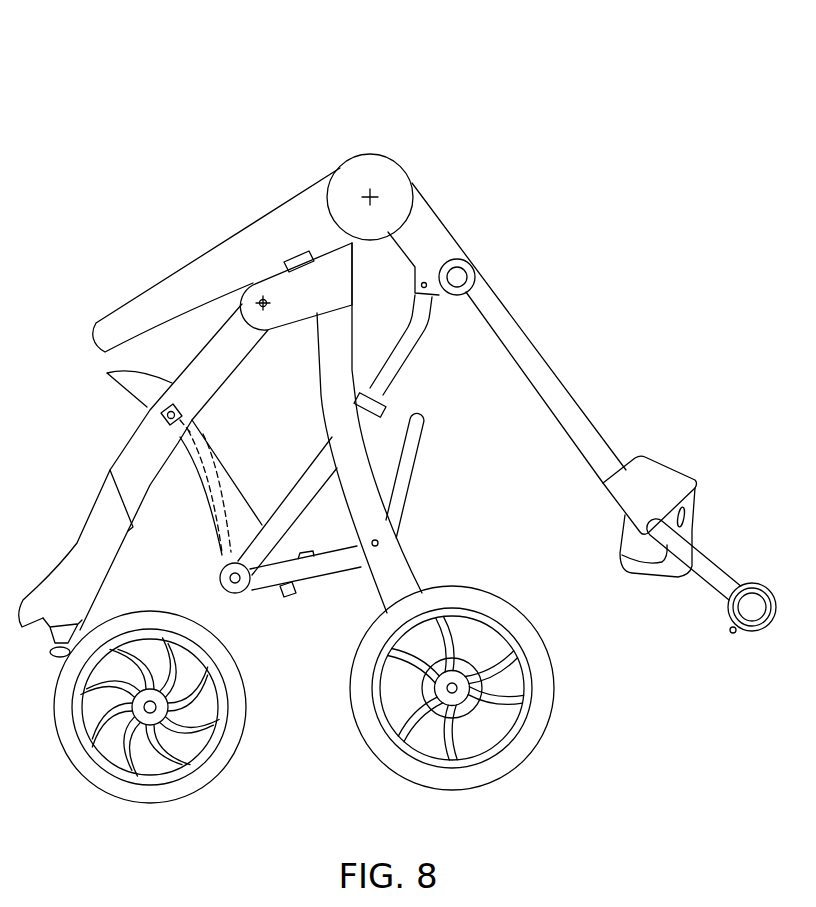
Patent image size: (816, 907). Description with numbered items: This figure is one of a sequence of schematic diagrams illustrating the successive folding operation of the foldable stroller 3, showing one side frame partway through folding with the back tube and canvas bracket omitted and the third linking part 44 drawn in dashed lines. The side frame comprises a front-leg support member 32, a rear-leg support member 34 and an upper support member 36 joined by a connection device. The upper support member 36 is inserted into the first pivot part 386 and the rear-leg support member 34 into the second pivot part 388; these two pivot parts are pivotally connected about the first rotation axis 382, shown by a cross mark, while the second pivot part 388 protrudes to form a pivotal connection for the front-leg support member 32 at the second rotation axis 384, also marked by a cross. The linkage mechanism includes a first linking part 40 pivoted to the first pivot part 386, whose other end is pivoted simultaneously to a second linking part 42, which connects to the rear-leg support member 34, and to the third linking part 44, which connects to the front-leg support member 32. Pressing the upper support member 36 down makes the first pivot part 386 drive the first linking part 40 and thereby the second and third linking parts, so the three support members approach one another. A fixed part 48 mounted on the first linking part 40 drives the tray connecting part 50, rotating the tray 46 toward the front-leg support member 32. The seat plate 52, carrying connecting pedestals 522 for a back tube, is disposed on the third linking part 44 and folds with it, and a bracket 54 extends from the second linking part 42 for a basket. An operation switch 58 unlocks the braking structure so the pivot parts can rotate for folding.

The foldable stroller 3 is at (192, 52).
The front-leg support member 32 is at (137, 450).
The rear-leg support member 34 is at (398, 577).
The upper support member 36 is at (553, 390).
The first linking part 40 is at (420, 322).
The second linking part 42 is at (332, 566).
The third linking part 44 is at (212, 497).
The tray 46 is at (121, 322).
The fixed part 48 is at (392, 392).
The tray connecting part 50 is at (287, 258).
The seat plate 52 is at (233, 483).
The bracket 54 is at (408, 440).
The operation switch 58 is at (732, 634).
The first rotation axis 382 is at (362, 188).
The second rotation axis 384 is at (257, 297).
The first pivot part 386 is at (430, 230).
The second pivot part 388 is at (335, 258).
The connecting pedestal 522 is at (292, 556).